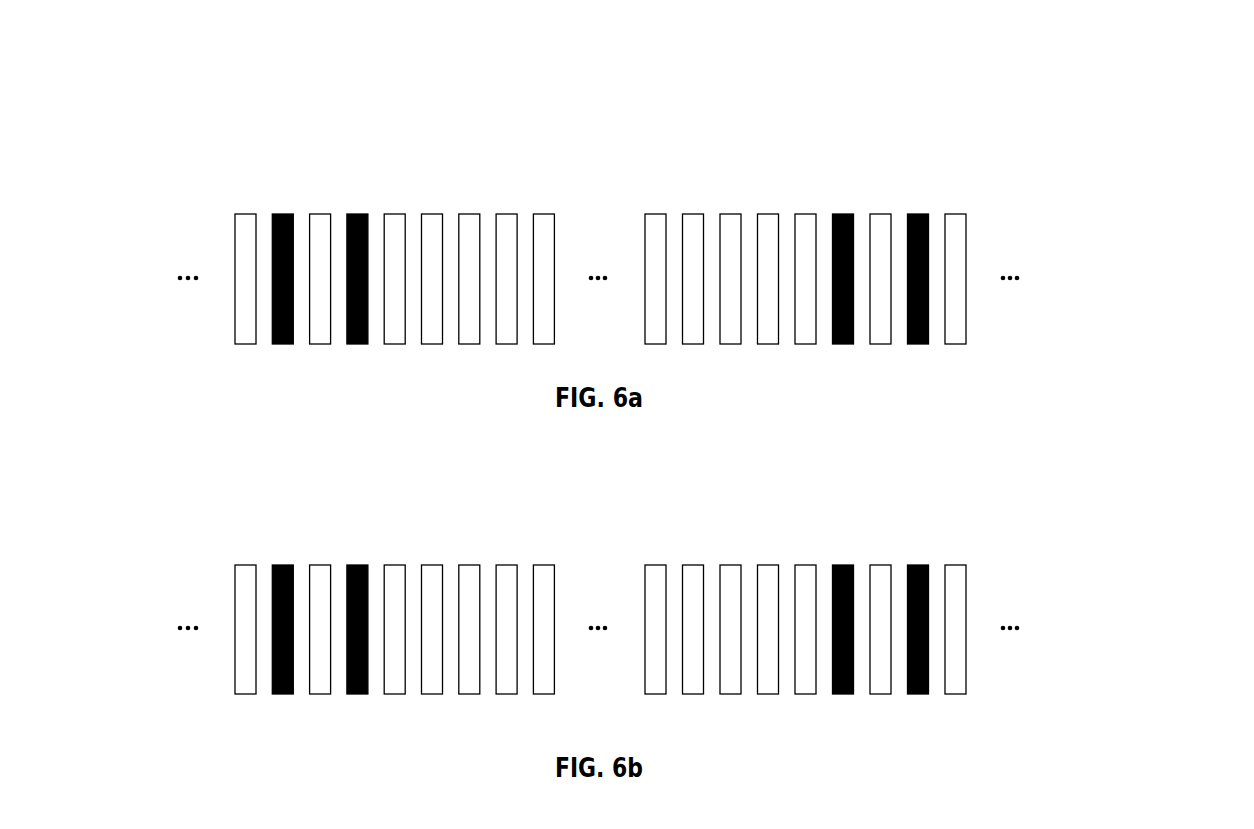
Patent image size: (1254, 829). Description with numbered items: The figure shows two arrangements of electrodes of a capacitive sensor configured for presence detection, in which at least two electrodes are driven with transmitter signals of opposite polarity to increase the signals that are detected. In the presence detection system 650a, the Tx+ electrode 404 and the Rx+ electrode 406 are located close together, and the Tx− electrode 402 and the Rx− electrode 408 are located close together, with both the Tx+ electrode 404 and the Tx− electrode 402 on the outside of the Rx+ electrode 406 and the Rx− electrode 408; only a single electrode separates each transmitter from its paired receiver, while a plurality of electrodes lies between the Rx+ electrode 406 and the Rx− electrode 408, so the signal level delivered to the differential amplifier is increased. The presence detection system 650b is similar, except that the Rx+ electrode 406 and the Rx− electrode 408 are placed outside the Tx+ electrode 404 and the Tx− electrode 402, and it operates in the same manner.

In FIG. 6a, the Tx− electrode 402 is at (953, 239).
In FIG. 6b, the Tx− electrode 402 is at (873, 590).
In FIG. 6a, the Tx+ electrode 404 is at (316, 238).
In FIG. 6b, the Tx+ electrode 404 is at (389, 589).
In FIG. 6a, the Rx+ electrode 406 is at (391, 238).
In FIG. 6b, the Rx+ electrode 406 is at (317, 592).
In FIG. 6a, the Rx− electrode 408 is at (877, 239).
In FIG. 6b, the Rx− electrode 408 is at (953, 590).
In FIG. 6a, the presence detection system 650a is at (900, 90).
In FIG. 6b, the presence detection system 650b is at (1048, 501).